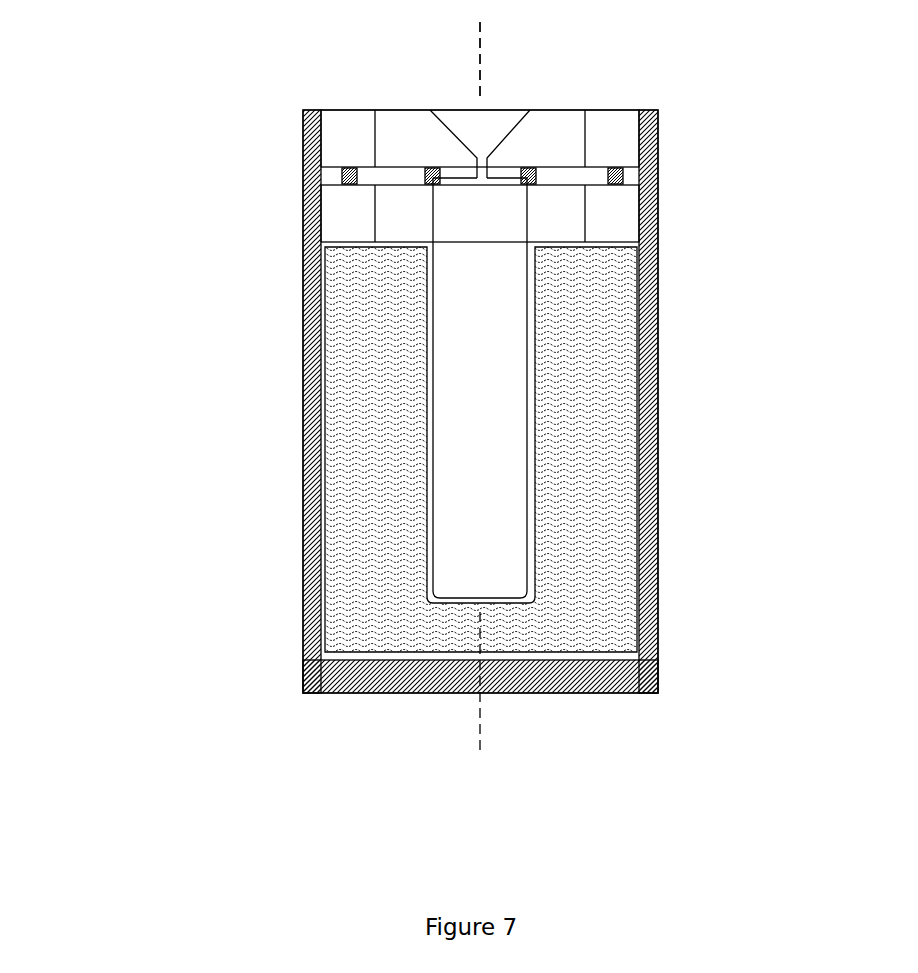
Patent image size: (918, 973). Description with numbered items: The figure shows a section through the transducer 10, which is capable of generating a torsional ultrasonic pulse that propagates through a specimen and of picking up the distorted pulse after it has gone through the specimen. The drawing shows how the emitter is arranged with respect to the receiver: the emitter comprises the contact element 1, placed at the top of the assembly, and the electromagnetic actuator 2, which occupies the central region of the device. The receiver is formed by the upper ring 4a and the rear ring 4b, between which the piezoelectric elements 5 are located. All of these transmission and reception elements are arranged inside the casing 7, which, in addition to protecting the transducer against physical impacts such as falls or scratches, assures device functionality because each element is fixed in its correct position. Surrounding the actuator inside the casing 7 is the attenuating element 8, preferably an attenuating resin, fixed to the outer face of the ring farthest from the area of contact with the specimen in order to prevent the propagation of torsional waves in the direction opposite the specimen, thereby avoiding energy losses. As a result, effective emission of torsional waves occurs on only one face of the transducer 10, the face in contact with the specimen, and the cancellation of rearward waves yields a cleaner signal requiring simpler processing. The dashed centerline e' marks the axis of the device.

The contact element 1 is at (475, 130).
The electromagnetic actuator 2 is at (495, 440).
The upper ring 4a is at (604, 141).
The rear ring 4b is at (605, 211).
The piezoelectric elements 5 is at (424, 181).
The casing 7 is at (310, 682).
The attenuating element 8 is at (372, 470).
The transducer 10 is at (175, 320).
The axis e' is at (611, 50).